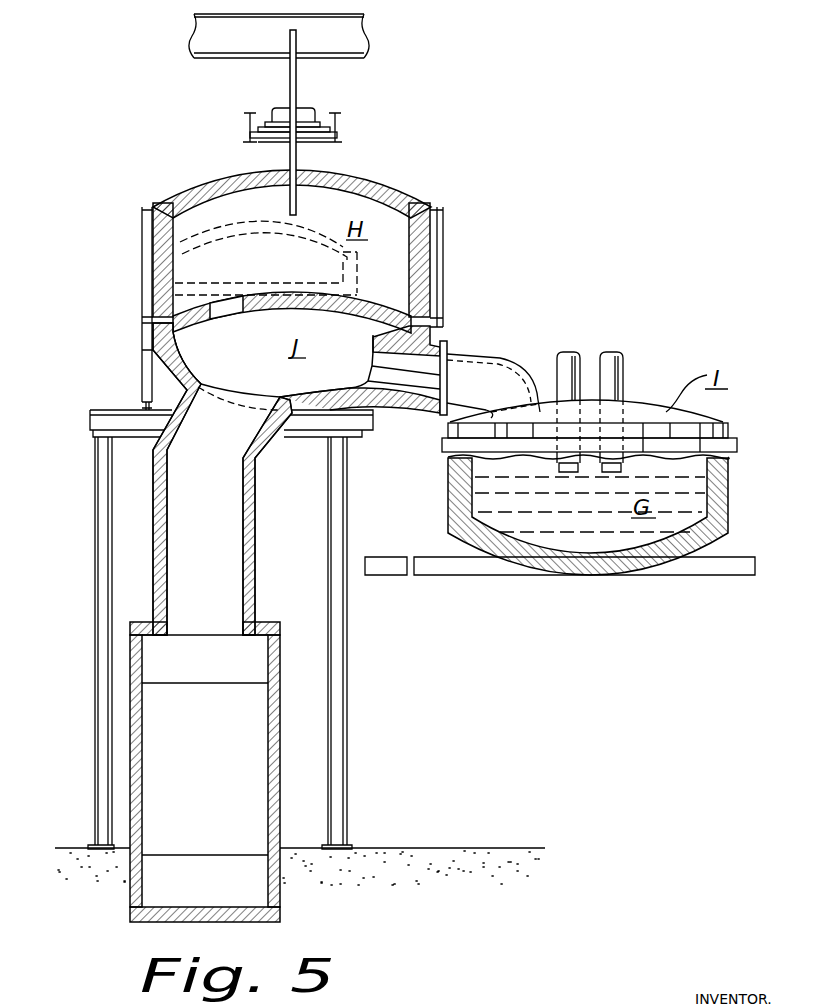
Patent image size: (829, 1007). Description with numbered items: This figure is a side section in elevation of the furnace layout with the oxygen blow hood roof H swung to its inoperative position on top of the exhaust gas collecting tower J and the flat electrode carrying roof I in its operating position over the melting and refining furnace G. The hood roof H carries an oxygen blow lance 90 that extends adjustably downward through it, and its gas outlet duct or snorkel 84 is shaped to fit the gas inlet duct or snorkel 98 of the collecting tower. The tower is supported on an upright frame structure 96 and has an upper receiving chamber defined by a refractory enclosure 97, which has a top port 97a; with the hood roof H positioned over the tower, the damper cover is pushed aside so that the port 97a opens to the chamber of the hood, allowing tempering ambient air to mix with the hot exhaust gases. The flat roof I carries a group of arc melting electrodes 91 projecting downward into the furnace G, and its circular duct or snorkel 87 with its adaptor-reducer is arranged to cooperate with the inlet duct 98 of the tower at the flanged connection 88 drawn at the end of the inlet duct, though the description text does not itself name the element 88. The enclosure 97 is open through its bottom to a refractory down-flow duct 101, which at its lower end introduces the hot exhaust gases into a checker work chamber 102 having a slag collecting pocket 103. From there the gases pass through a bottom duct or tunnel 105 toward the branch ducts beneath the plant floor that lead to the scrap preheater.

The gas outlet duct or snorkel 84 is at (271, 228).
The circular duct or snorkel 87 is at (503, 370).
The nozzle flange 88 is at (448, 352).
The oxygen blow lance 90 is at (297, 163).
The arc melting electrodes 91 is at (603, 472).
The upright frame structure 96 is at (348, 700).
The refractory enclosure 97 is at (333, 308).
The top port 97a is at (228, 313).
The gas inlet duct or snorkel 98 is at (386, 411).
The refractory down-flow duct 101 is at (157, 517).
The checker work chamber 102 is at (260, 663).
The slag collecting pocket 103 is at (260, 775).
The bottom duct or tunnel 105 is at (260, 897).